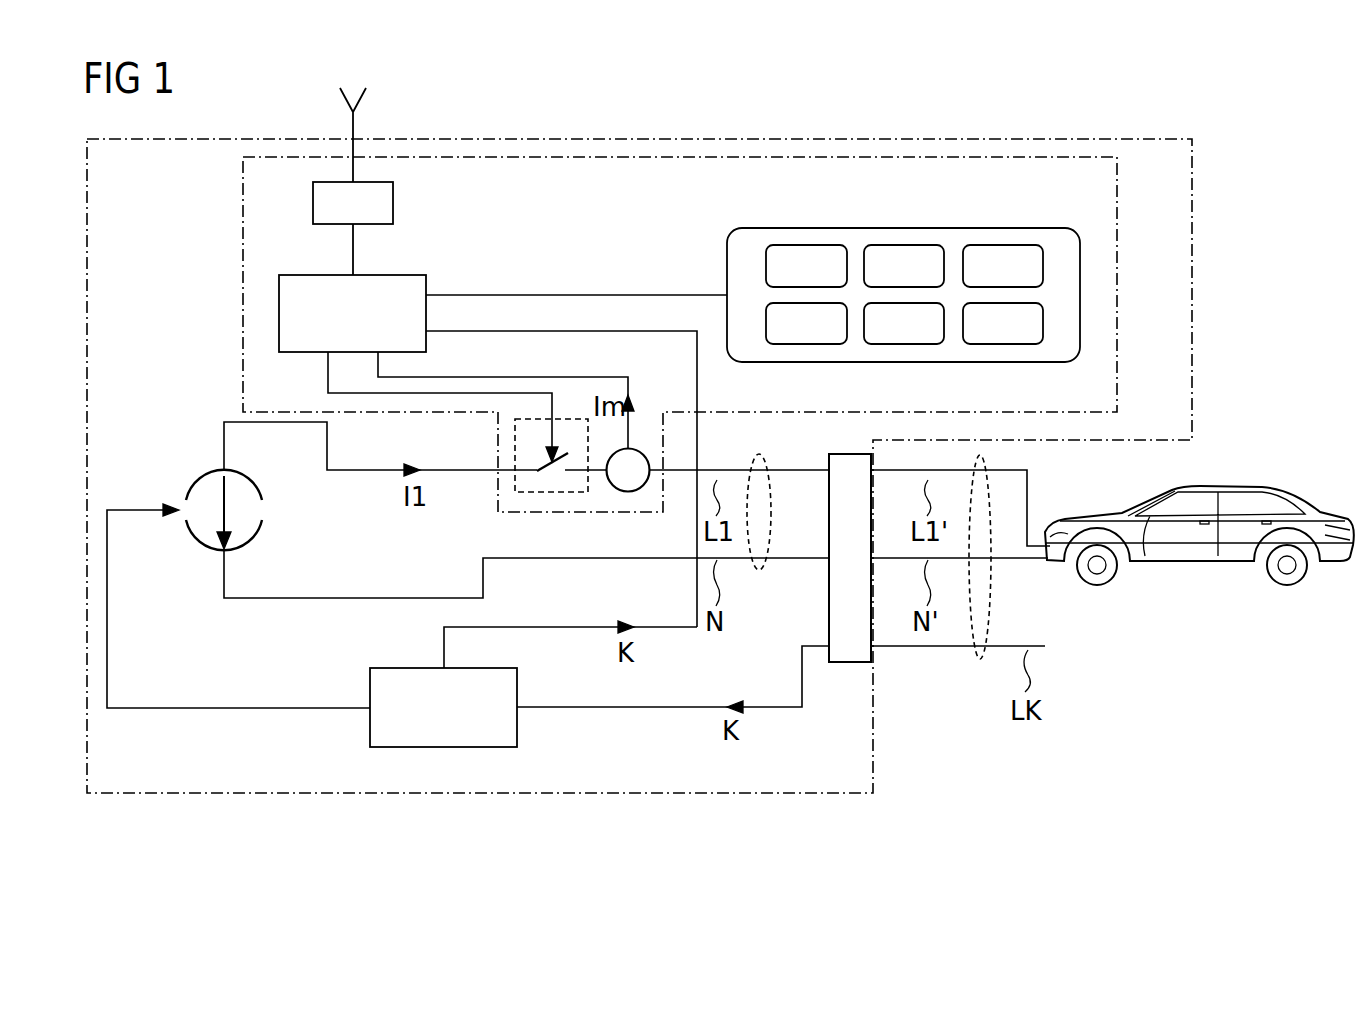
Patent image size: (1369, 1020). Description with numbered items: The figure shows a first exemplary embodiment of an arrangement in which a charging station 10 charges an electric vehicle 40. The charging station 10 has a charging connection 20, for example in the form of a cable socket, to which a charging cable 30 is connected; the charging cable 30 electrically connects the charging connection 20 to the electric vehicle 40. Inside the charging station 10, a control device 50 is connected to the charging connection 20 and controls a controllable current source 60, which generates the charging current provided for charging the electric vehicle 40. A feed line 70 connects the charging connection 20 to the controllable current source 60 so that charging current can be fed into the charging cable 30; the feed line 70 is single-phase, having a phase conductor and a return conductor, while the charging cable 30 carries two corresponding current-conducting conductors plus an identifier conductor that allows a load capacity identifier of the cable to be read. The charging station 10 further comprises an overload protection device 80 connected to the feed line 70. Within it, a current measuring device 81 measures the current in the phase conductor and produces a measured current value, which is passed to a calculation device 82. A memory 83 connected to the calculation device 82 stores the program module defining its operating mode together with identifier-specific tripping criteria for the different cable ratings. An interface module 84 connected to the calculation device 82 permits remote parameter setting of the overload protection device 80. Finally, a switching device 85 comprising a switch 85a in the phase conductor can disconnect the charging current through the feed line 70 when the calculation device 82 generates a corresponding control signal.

The charging station 10 is at (873, 740).
The charging connection 20 is at (852, 454).
The charging cable 30 is at (991, 600).
The electric vehicle 40 is at (1200, 567).
The control device 50 is at (468, 625).
The controllable current source 60 is at (204, 472).
The feed line 70 is at (760, 572).
The overload protection device 80 is at (243, 244).
The current measuring device 81 is at (628, 492).
The calculation device 82 is at (503, 451).
The memory 83 is at (727, 257).
The interface module 84 is at (353, 181).
The switching device 85 is at (515, 436).
The switch 85a is at (553, 478).